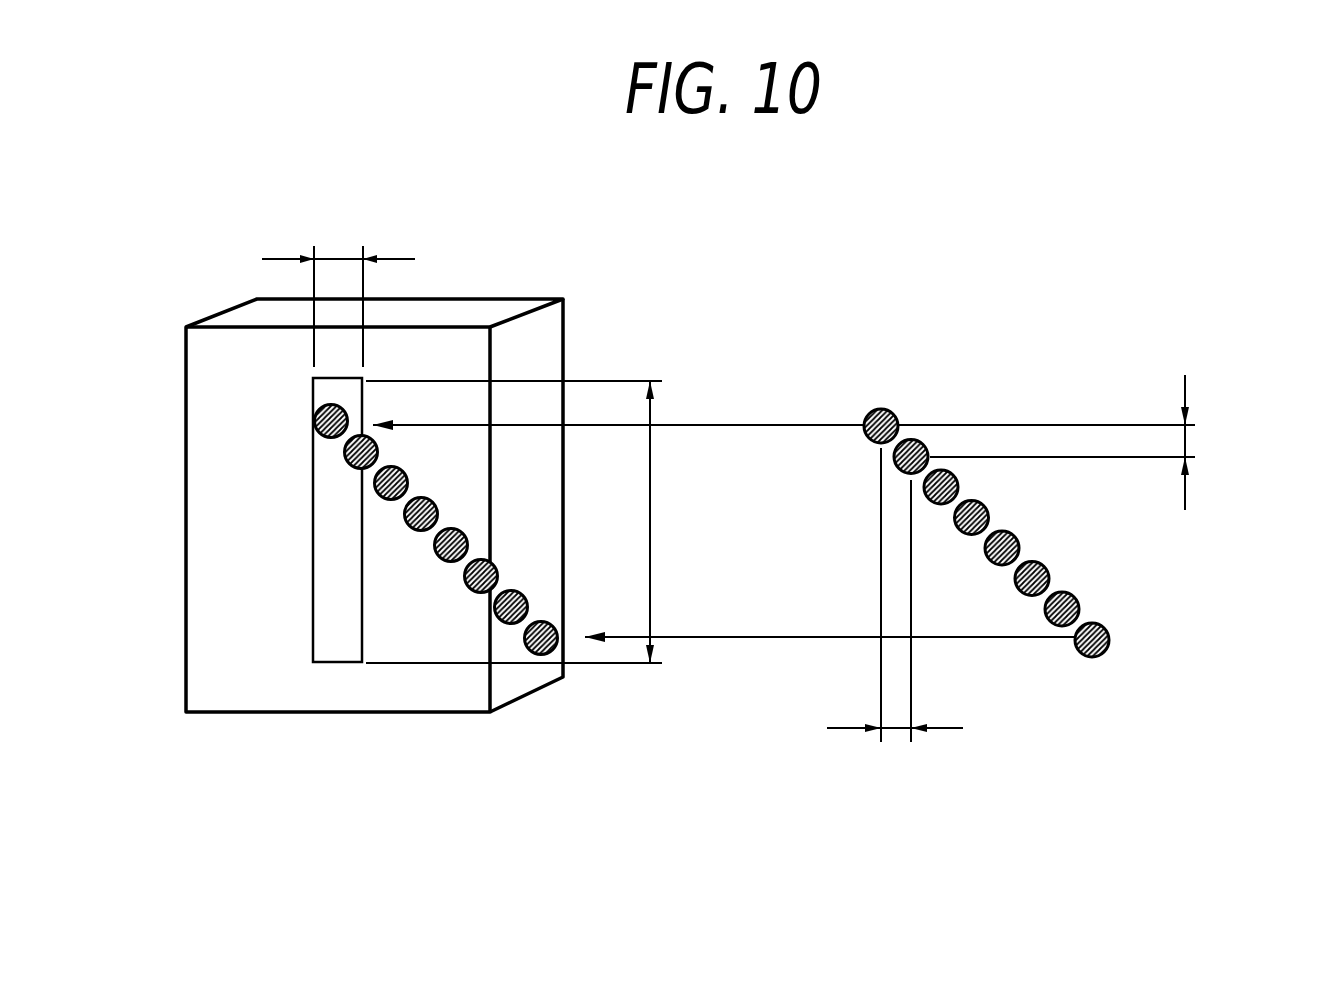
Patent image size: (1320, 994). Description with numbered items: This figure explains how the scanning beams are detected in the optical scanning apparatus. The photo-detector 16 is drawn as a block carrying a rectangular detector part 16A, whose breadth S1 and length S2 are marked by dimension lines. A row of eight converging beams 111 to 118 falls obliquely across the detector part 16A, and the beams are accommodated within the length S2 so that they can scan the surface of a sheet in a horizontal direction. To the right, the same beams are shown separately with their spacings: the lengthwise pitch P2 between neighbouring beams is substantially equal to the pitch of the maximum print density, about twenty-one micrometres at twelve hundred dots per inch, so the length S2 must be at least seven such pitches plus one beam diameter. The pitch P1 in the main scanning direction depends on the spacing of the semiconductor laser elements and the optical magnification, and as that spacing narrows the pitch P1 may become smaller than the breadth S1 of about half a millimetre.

The photo-detector 16 is at (499, 312).
The detector part 16A is at (336, 663).
The converging beam 111 is at (881, 408).
The converging beam 118 is at (1111, 639).
The breadth S1 is at (338, 288).
The length S2 is at (533, 522).
The pitch in main scanning direction P1 is at (895, 617).
The lengthwise pitch P2 is at (1212, 442).